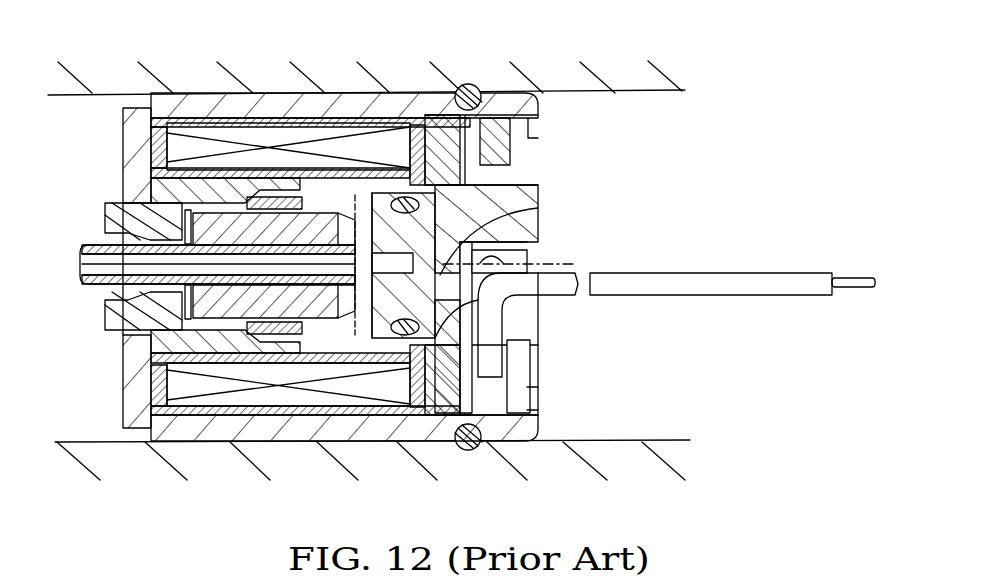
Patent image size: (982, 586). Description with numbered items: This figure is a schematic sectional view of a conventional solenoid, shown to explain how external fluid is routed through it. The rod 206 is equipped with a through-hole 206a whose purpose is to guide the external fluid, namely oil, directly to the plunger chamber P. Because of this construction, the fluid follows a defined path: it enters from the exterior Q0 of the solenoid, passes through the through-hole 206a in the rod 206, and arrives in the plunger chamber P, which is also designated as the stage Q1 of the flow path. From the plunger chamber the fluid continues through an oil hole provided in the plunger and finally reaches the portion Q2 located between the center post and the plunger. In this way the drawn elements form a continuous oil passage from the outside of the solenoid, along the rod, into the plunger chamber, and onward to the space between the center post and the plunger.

The rod 206 is at (103, 236).
The through-hole 206a is at (80, 272).
The exterior Q0 is at (80, 265).
The portion between the center post and the plunger Q2 is at (128, 330).
The plunger chamber P is at (350, 195).
The plunger chamber Q1 is at (538, 208).